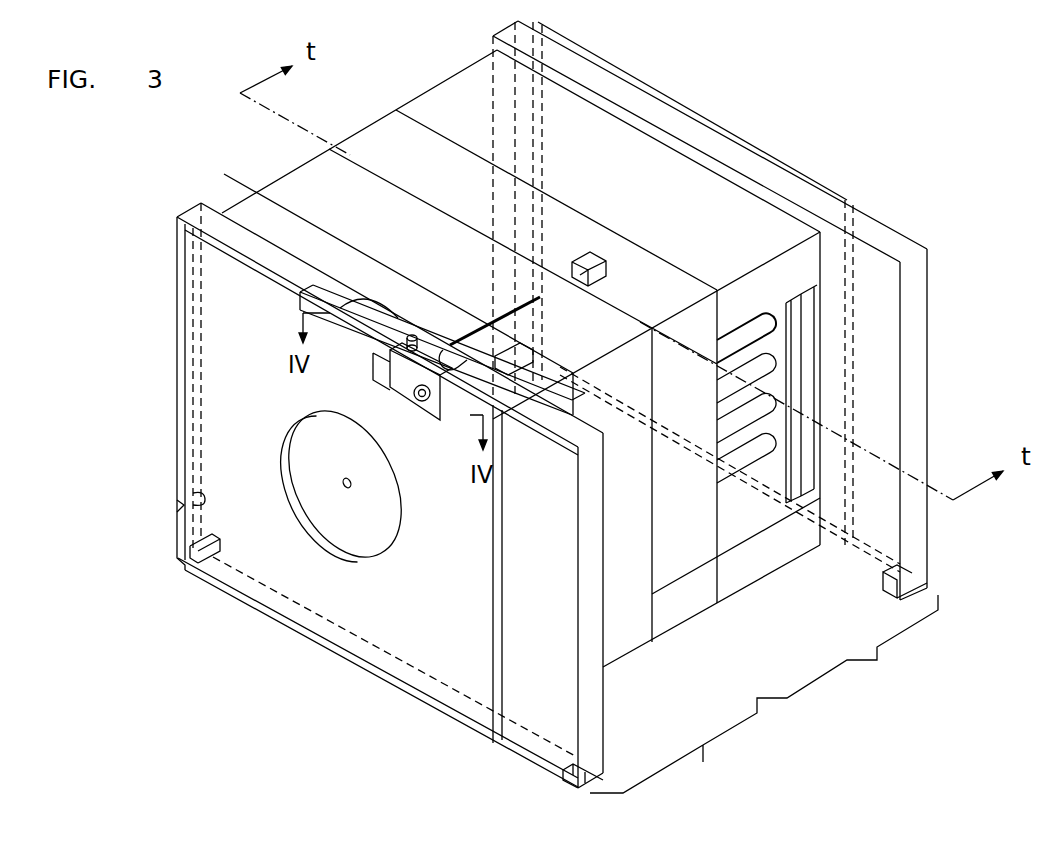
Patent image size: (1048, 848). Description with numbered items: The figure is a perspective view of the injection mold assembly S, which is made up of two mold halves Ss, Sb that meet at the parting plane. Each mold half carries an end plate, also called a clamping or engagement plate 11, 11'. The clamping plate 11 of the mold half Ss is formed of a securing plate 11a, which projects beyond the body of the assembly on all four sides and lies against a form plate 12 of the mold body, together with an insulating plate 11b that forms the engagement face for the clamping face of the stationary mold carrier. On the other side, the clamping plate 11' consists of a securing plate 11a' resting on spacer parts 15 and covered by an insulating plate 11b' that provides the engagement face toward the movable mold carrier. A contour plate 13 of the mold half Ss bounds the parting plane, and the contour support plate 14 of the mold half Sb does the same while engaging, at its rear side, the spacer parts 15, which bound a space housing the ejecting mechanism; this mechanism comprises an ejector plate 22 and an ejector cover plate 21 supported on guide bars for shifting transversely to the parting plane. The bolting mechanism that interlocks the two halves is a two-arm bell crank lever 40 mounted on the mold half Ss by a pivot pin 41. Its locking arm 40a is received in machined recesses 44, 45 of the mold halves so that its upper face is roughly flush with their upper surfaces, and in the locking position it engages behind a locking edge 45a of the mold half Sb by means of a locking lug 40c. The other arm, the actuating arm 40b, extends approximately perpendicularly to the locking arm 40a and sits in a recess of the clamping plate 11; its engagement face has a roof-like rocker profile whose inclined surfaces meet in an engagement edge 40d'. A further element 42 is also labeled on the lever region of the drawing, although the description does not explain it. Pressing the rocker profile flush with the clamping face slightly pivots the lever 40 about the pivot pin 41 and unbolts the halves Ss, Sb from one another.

The clamping plate 11 is at (327, 458).
The securing plate 11a is at (520, 610).
The insulating plate 11b is at (377, 495).
The clamping plate 11' is at (721, 303).
The securing plate 11a' is at (897, 382).
The insulating plate 11b' is at (710, 141).
The form plate 12 is at (258, 220).
The contour plate 13 is at (317, 192).
The contour support plate 14 is at (385, 135).
The spacer parts 15 is at (457, 107).
The ejector cover plate 21 is at (805, 347).
The ejector plate 22 is at (793, 373).
The bell crank lever 40 is at (415, 333).
The locking arm 40a is at (460, 325).
The actuating arm 40b is at (453, 350).
The locking lug 40c is at (583, 284).
The engagement edge 40d' is at (380, 402).
The pivot pin 41 is at (403, 345).
The slide block 42 is at (442, 420).
The recess 44 is at (480, 313).
The recess 45 is at (585, 263).
The locking edge 45a is at (600, 268).
The injection mold assembly S is at (845, 110).
The mold half Ss is at (661, 769).
The mold half Sb is at (820, 670).